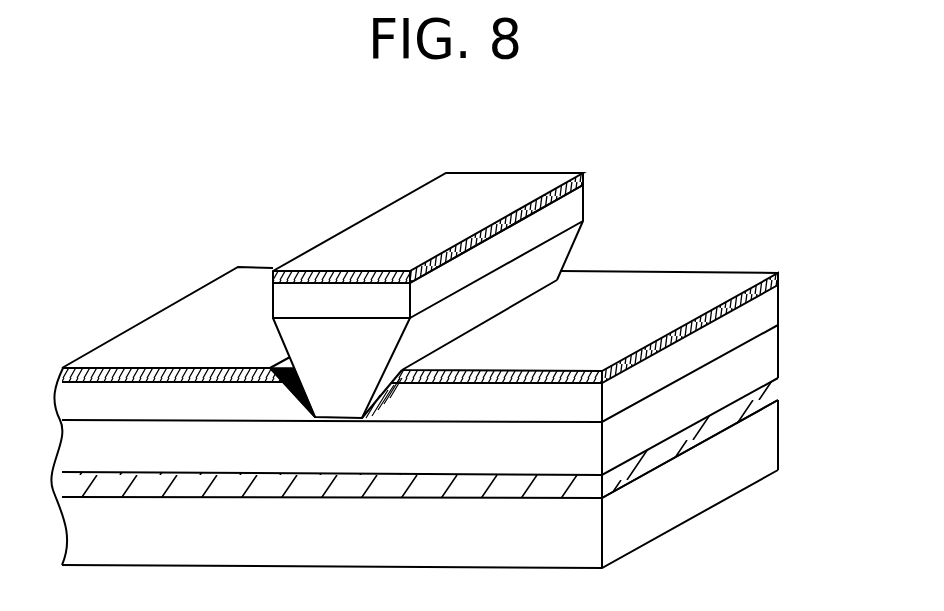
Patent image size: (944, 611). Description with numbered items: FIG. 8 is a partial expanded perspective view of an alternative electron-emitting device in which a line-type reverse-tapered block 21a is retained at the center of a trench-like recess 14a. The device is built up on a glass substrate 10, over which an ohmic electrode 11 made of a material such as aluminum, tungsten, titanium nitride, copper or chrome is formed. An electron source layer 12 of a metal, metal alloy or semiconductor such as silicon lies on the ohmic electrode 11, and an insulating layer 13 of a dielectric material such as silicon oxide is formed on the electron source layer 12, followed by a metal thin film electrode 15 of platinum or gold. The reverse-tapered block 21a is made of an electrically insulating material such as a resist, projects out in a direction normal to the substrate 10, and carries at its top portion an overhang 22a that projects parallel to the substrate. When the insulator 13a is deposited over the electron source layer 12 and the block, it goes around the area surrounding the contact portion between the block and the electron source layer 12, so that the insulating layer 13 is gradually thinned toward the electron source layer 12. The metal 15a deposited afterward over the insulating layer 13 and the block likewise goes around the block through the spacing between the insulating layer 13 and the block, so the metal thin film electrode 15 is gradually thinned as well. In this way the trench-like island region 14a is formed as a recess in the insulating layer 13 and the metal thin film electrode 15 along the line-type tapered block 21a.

The glass substrate 10 is at (768, 450).
The ohmic electrode 11 is at (768, 393).
The electron source layer 12 is at (768, 353).
The insulating layer 13 is at (768, 312).
The metal thin film electrode 15 is at (777, 277).
The insulator 13a is at (572, 203).
The trench-like recess 14a is at (276, 402).
The metal 15a is at (430, 197).
The line-type tapered block 21a is at (328, 337).
The overhang 22a is at (550, 258).